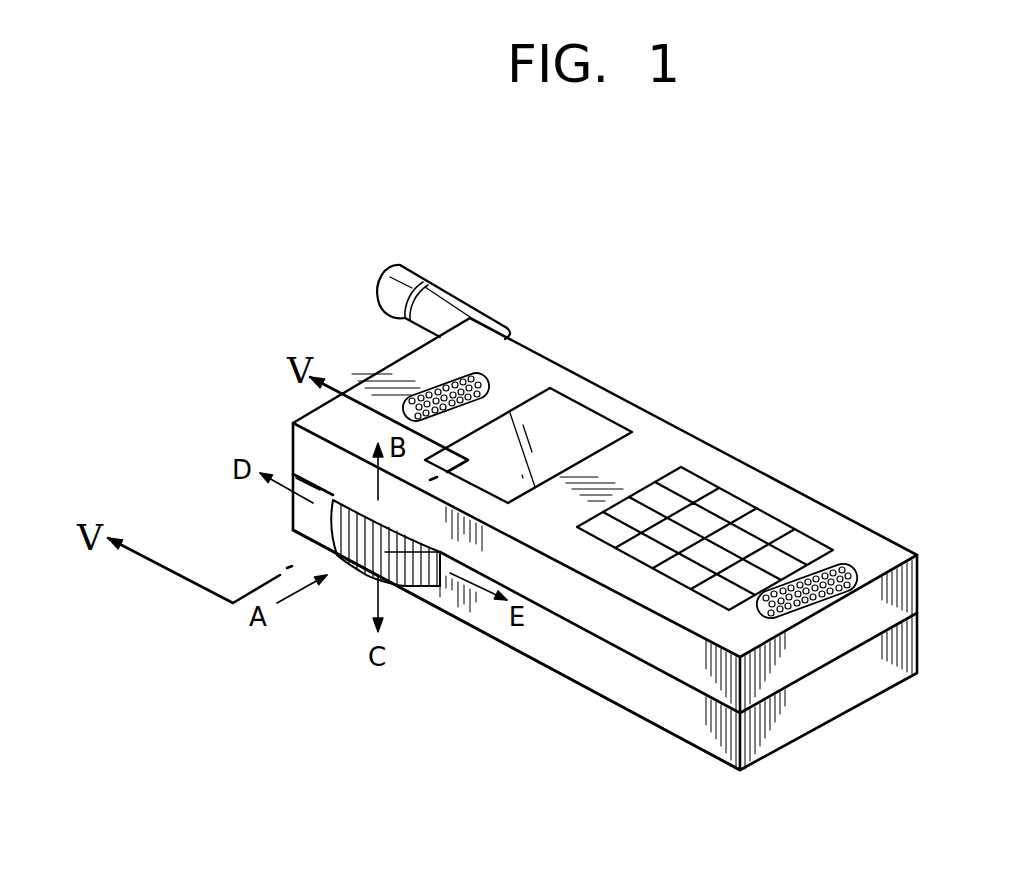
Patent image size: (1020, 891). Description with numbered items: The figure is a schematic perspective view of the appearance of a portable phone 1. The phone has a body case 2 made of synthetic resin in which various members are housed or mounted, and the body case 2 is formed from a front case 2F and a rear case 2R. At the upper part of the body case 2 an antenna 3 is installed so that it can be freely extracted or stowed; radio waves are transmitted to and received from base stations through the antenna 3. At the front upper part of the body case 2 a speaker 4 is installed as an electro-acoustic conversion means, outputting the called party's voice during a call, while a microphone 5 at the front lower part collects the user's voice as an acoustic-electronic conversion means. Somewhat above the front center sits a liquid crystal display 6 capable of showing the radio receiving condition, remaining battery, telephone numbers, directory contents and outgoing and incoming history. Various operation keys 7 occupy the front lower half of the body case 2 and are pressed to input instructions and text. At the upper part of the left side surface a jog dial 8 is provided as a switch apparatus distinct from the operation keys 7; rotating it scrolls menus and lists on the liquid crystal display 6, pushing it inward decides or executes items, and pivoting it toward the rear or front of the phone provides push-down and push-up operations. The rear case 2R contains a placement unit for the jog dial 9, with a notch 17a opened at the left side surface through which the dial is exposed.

The portable phone 1 is at (687, 332).
The body case 2 is at (832, 525).
The front case 2F is at (703, 463).
The rear case 2R is at (693, 712).
The antenna 3 is at (447, 292).
The speaker 4 is at (483, 380).
The microphone 5 is at (818, 605).
The liquid crystal display 6 is at (560, 405).
The operation keys 7 is at (722, 503).
The jog dial 8 is at (363, 577).
The jog dial 9 is at (320, 533).
The notch 17a is at (420, 568).